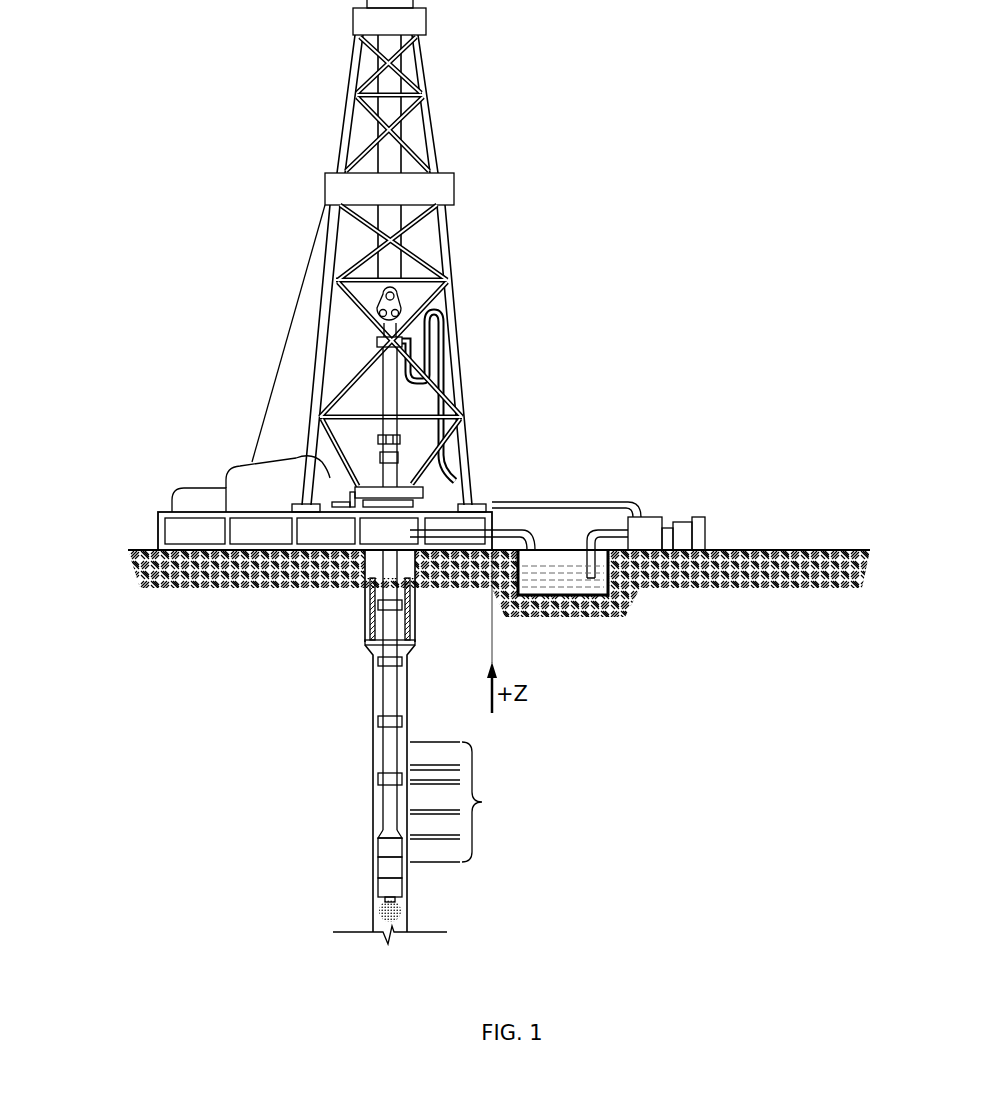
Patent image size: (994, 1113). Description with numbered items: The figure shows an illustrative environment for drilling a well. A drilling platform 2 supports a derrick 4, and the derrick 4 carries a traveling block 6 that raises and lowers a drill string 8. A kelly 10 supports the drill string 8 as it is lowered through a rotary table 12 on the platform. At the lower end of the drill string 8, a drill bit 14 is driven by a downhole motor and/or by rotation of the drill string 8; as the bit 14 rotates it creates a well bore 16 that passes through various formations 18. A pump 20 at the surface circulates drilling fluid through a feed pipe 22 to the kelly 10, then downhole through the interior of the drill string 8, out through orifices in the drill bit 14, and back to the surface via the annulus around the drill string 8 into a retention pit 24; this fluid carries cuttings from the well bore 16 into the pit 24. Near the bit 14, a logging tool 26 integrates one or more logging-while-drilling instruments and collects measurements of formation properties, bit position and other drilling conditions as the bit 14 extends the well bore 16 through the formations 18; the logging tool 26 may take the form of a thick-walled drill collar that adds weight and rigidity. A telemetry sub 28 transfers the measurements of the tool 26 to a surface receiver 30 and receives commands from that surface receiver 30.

The drilling platform 2 is at (158, 516).
The derrick 4 is at (436, 122).
The traveling block 6 is at (400, 305).
The drill string 8 is at (383, 692).
The kelly 10 is at (390, 367).
The rotary table 12 is at (423, 490).
The drill bit 14 is at (403, 910).
The well bore 16 is at (408, 707).
The formations 18 is at (463, 802).
The pump 20 is at (647, 518).
The feed pipe 22 is at (551, 504).
The retention pit 24 is at (598, 588).
The logging tool 26 is at (383, 868).
The telemetry sub 28 is at (383, 850).
The surface receiver 30 is at (400, 440).